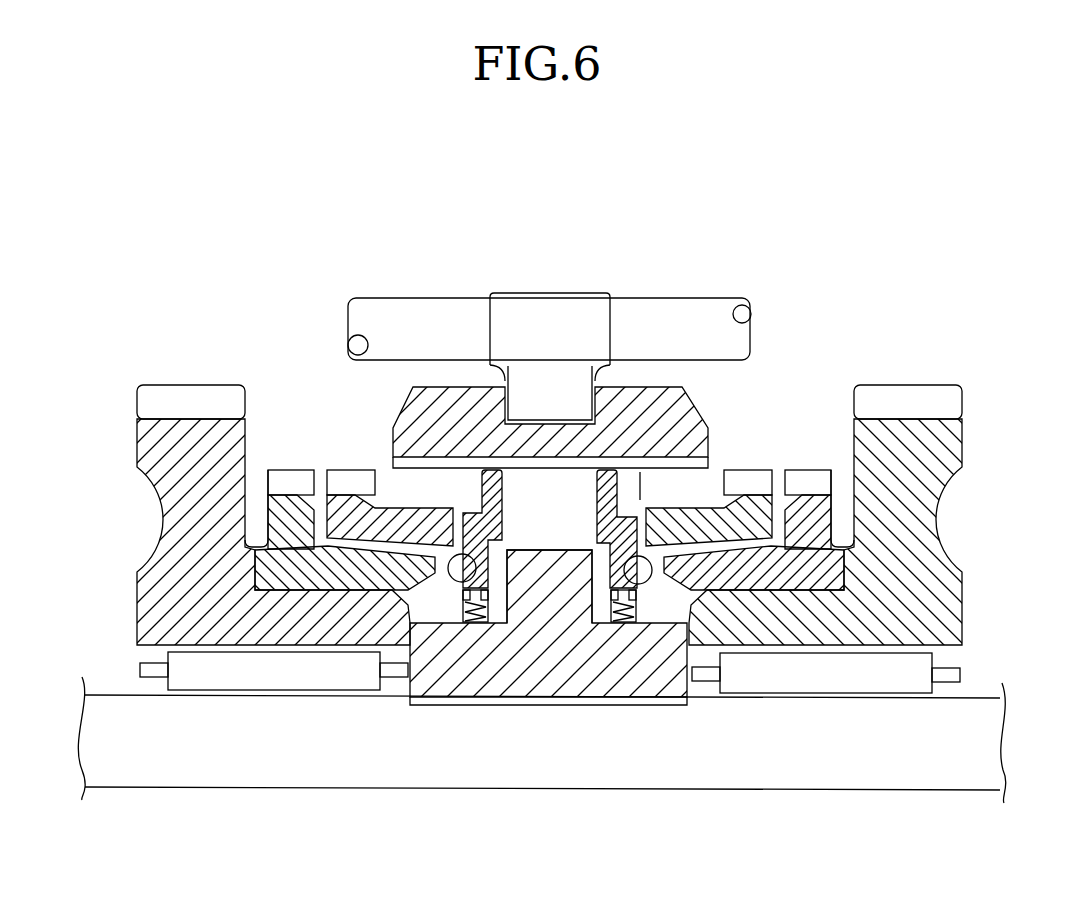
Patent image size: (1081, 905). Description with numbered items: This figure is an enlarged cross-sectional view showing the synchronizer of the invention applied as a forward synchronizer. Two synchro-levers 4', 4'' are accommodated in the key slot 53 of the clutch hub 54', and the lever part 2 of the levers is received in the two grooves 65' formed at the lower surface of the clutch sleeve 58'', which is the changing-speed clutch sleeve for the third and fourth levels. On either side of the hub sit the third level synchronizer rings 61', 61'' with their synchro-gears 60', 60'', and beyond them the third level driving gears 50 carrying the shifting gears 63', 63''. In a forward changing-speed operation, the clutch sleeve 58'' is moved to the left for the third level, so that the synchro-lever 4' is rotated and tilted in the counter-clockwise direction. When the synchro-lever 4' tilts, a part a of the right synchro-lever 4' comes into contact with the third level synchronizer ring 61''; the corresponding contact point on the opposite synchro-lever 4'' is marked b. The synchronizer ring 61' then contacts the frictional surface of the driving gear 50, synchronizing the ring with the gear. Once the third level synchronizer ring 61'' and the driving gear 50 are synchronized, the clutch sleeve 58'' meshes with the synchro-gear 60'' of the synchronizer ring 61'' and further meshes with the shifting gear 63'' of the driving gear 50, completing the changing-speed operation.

The lever part 2 is at (497, 458).
The synchro-lever 4' is at (423, 435).
The synchro-lever 4'' is at (604, 670).
The third level driving gear 50 is at (187, 450).
The key slot 53 is at (550, 552).
The clutch hub 54' is at (548, 727).
The clutch sleeve 58'' is at (550, 335).
The synchro-gear 60' is at (709, 462).
The synchro-gear 60'' is at (390, 461).
The third level synchronizer ring 61' is at (849, 532).
The third level synchronizer ring 61'' is at (248, 531).
The shifting gear 63' is at (819, 445).
The shifting gear 63'' is at (279, 445).
The groove 65' is at (682, 382).
The part of synchro-lever a is at (455, 582).
The contact point b is at (645, 584).